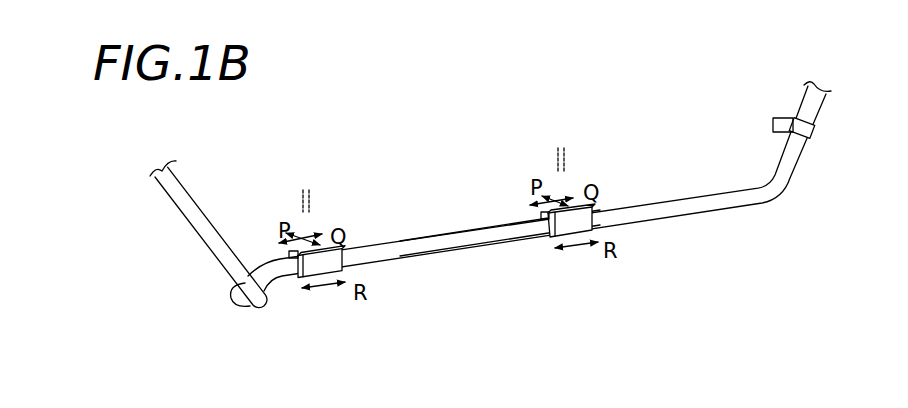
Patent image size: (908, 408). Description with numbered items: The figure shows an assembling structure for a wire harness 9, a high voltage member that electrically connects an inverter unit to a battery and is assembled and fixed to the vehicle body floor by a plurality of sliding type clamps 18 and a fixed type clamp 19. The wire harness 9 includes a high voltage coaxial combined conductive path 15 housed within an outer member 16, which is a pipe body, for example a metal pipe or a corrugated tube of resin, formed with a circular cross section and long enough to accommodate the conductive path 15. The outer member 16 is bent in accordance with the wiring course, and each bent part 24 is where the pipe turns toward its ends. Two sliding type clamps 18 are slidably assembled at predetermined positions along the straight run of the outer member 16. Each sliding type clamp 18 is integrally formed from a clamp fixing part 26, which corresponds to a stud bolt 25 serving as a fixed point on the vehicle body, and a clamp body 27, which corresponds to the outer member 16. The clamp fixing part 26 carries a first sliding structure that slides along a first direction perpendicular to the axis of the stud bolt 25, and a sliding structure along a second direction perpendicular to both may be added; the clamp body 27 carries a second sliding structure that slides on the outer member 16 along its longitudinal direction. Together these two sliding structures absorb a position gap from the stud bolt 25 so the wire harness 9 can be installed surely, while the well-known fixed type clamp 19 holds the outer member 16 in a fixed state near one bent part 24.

The wire harness 9 is at (401, 202).
The high voltage coaxial combined conductive path 15 is at (673, 209).
The outer member 16 is at (464, 238).
The sliding type clamp 18 is at (338, 252).
The fixed type clamp 19 is at (816, 141).
The bent part 24 is at (232, 297).
The stud bolt 25 is at (300, 194).
The clamp fixing part 26 is at (290, 250).
The clamp body 27 is at (335, 268).